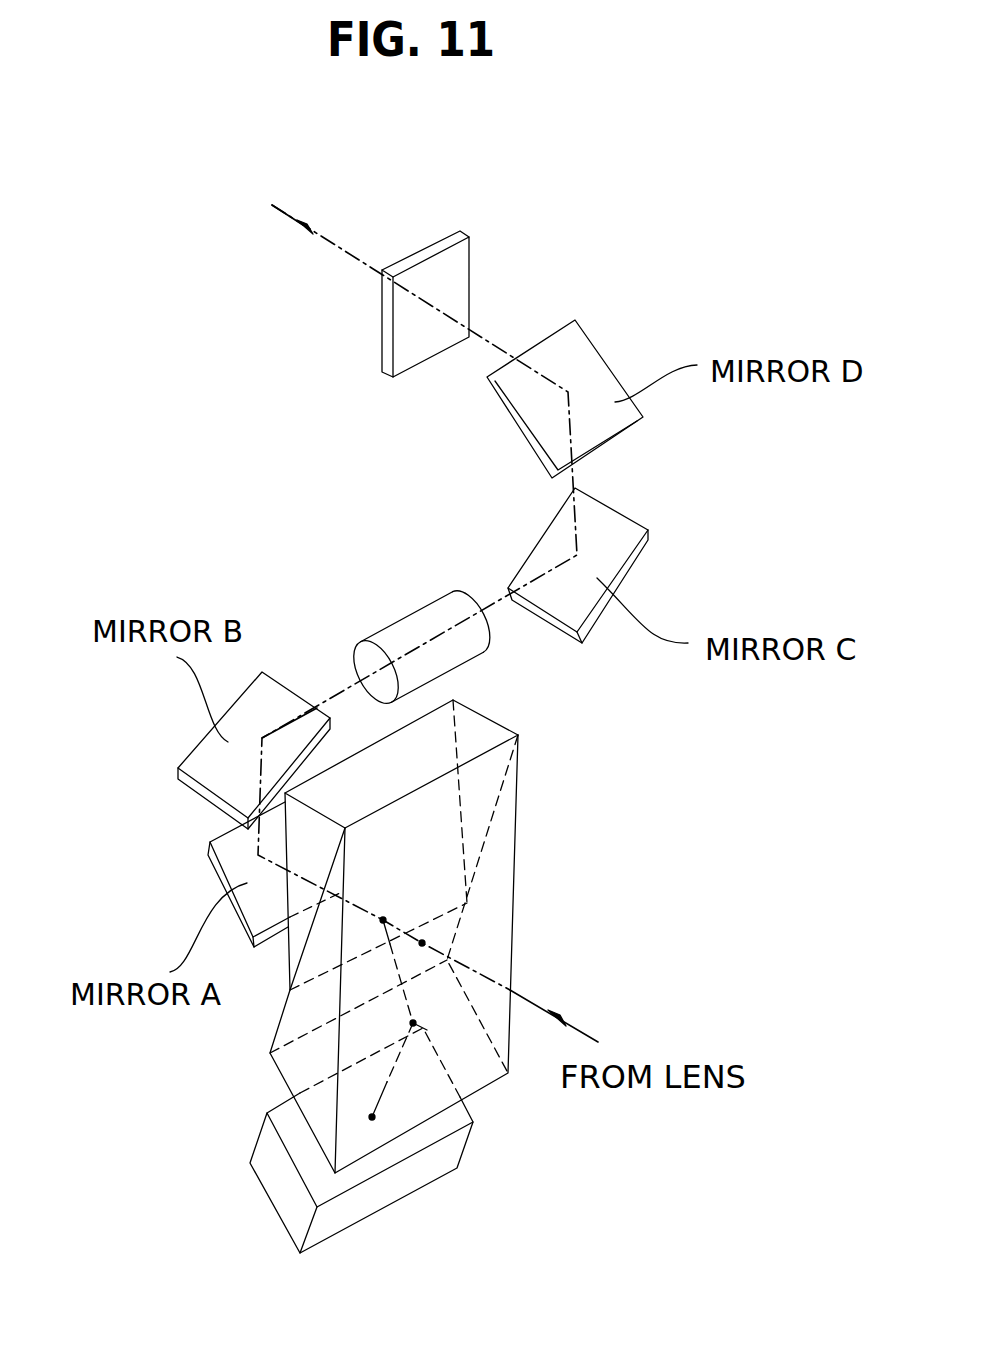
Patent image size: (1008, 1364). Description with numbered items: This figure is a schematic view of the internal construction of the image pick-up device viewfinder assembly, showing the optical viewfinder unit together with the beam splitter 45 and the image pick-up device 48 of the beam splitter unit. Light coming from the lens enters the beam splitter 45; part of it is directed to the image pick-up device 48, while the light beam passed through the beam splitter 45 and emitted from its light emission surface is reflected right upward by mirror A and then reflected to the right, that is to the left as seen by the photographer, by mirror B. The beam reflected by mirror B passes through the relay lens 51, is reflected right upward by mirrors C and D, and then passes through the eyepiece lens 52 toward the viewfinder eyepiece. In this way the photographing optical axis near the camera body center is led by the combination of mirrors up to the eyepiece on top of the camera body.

The beam splitter 45 is at (515, 887).
The image pick-up device 48 is at (442, 1182).
The relay lens 51 is at (415, 630).
The eyepiece lens 52 is at (460, 283).